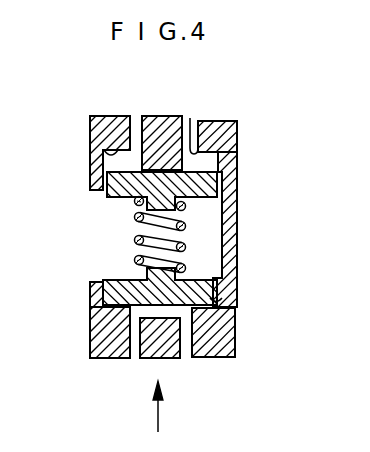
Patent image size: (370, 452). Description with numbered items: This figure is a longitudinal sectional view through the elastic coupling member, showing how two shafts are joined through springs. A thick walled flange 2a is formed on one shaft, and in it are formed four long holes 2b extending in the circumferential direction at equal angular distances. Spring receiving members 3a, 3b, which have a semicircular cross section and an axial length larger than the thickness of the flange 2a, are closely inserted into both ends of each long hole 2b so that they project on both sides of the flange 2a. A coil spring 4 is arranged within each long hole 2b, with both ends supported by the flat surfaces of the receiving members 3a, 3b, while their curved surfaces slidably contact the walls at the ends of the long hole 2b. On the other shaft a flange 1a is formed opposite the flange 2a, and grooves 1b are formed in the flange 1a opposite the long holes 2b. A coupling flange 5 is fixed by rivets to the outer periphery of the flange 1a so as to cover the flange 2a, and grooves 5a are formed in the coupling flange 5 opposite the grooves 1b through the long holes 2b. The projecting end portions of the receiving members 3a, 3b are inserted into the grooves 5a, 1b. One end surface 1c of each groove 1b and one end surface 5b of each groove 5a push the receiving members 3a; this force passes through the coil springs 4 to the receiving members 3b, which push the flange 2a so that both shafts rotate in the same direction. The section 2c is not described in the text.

The flange 1a is at (103, 332).
The grooves 1b is at (110, 160).
The end surface 1c is at (113, 116).
The thick walled flange 2a is at (150, 119).
The long holes 2b is at (118, 350).
The side portion 2c is at (226, 144).
The spring receiving member 3a is at (238, 252).
The spring receiving member 3b is at (214, 187).
The coil spring 4 is at (134, 239).
The coupling flange 5 is at (220, 343).
The grooves 5a is at (218, 162).
The end surface 5b is at (192, 116).